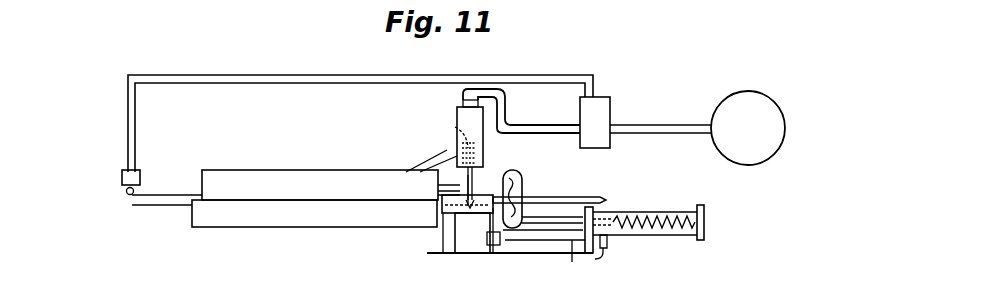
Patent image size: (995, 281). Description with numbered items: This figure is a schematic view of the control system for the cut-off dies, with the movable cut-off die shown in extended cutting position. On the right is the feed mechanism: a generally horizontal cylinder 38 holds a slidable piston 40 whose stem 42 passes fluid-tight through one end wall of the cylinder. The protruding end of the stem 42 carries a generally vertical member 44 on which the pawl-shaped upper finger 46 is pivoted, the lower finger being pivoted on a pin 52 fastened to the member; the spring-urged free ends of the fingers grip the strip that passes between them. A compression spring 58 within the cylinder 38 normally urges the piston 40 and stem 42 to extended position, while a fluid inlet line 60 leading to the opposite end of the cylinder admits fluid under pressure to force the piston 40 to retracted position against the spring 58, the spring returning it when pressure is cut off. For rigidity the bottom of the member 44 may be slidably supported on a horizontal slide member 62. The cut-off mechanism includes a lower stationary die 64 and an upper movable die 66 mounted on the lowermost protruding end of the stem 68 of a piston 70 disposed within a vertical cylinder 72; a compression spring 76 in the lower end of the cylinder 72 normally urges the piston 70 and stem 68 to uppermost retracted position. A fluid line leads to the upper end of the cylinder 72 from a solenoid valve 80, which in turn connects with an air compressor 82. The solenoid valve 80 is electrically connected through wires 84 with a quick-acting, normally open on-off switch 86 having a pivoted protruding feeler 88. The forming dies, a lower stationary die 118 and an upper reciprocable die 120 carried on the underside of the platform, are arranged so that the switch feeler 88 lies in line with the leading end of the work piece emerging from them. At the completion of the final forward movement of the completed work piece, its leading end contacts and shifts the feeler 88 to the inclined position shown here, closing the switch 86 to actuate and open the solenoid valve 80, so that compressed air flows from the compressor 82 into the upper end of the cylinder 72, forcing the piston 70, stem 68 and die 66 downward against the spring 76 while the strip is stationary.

The cylinder 38 is at (690, 208).
The piston 40 is at (613, 222).
The stem 42 is at (574, 255).
The vertically disposed member 44 is at (528, 176).
The upper finger 46 is at (525, 194).
The pin 52 is at (557, 205).
The compression spring 58 is at (640, 212).
The fluid inlet line 60 is at (616, 262).
The horizontal slide member 62 is at (500, 245).
The lower stationary die 64 is at (452, 212).
The upper movable die 66 is at (478, 215).
The stem 68 is at (472, 181).
The piston 70 is at (455, 127).
The vertical cylinder 72 is at (455, 113).
The compression spring 76 is at (445, 153).
The solenoid valve 80 is at (615, 108).
The air compressor 82 is at (752, 105).
The wires 84 is at (318, 83).
The on-off switch 86 is at (122, 175).
The feeler 88 is at (124, 195).
The lower stationary die 118 is at (280, 208).
The upper reciprocable die 120 is at (304, 181).